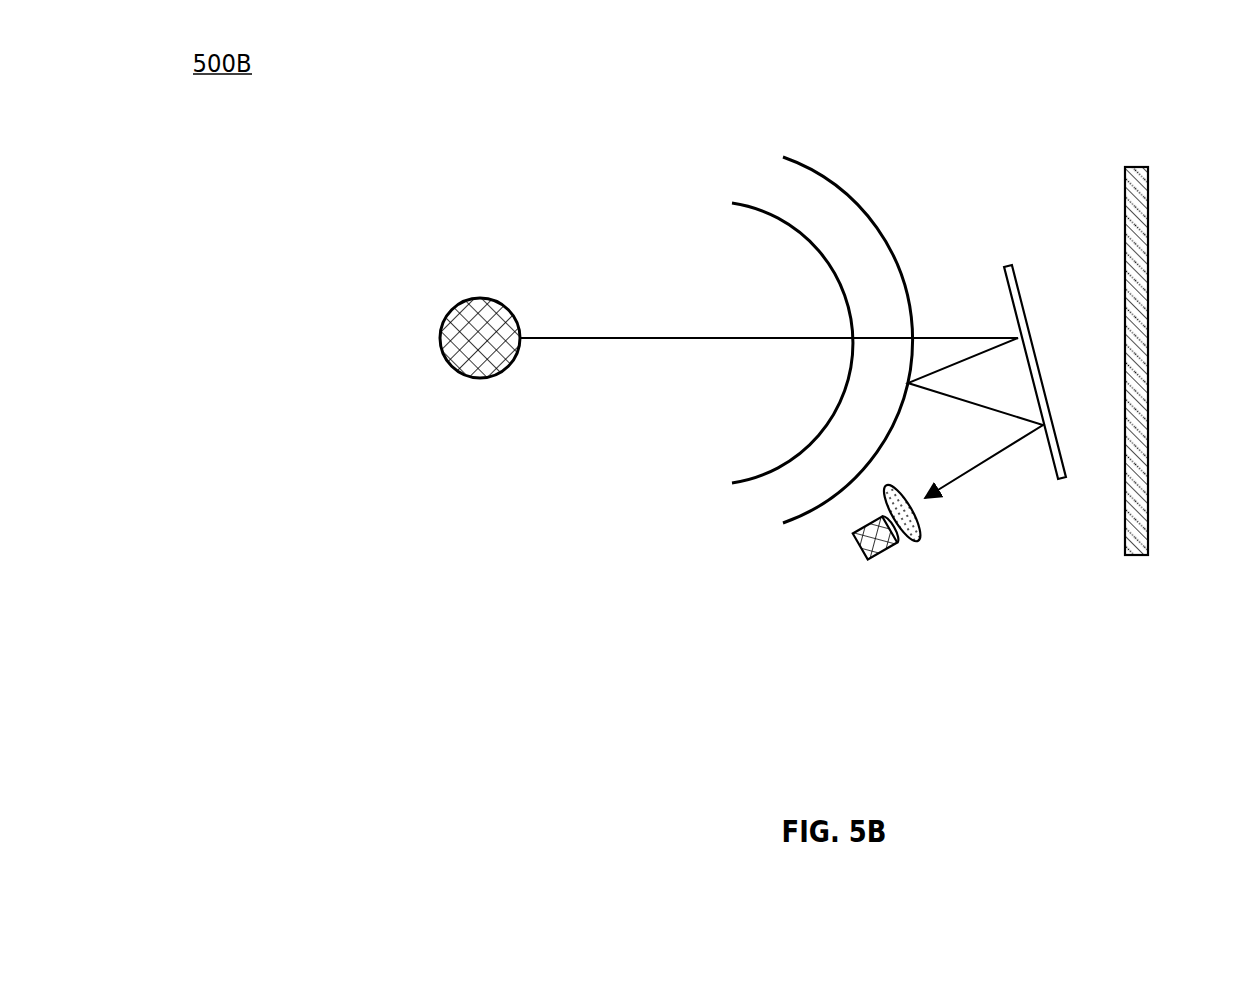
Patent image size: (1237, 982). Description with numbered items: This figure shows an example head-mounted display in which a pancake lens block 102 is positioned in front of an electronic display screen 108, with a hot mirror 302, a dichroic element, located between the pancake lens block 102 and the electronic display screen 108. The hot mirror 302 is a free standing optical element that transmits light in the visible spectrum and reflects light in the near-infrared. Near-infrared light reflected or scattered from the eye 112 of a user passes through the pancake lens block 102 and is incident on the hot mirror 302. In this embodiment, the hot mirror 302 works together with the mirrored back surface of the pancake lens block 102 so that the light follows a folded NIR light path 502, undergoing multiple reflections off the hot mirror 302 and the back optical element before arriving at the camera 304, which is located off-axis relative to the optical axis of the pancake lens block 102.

The eye 112 is at (477, 298).
The pancake lens block 102 is at (717, 530).
The hot mirror 302 is at (1018, 283).
The electronic display screen 108 is at (1135, 167).
The camera 304 is at (882, 558).
The folded NIR light path 502 is at (1047, 494).